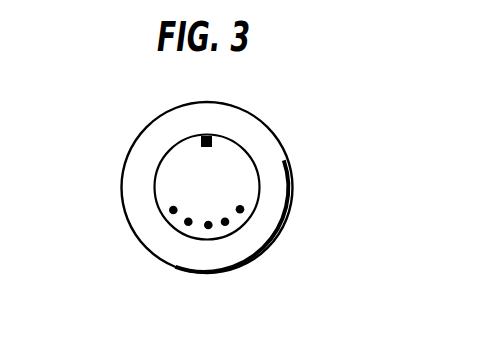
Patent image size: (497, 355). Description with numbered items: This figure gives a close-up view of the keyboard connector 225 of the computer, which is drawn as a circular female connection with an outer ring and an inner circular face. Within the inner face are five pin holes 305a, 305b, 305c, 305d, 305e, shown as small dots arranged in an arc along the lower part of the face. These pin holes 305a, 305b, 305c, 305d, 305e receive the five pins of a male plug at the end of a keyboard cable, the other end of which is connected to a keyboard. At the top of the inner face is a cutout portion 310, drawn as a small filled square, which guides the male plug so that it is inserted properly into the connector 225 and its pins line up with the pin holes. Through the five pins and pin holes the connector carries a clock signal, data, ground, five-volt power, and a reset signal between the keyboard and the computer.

The keyboard connector 225 is at (233, 103).
The cutout portion 310 is at (198, 137).
The pin hole 305a is at (173, 210).
The pin hole 305b is at (188, 222).
The pin hole 305c is at (208, 225).
The pin hole 305d is at (225, 222).
The pin hole 305e is at (240, 209).